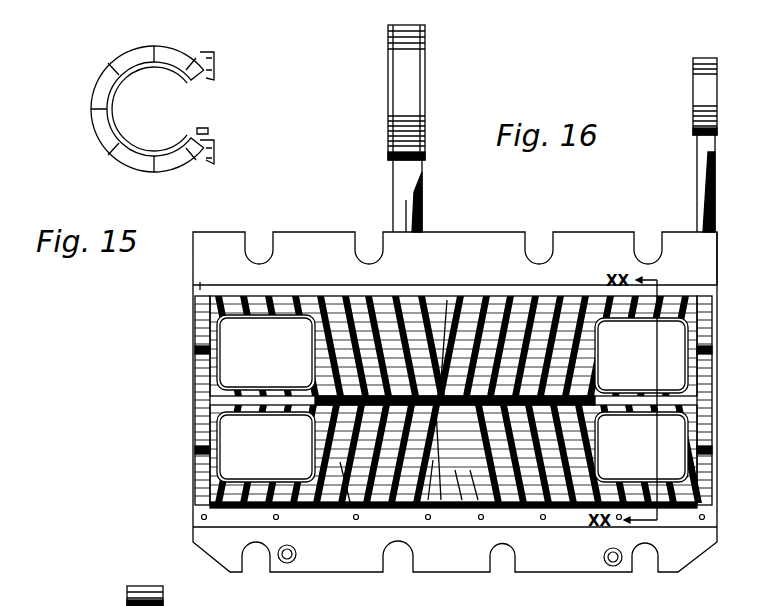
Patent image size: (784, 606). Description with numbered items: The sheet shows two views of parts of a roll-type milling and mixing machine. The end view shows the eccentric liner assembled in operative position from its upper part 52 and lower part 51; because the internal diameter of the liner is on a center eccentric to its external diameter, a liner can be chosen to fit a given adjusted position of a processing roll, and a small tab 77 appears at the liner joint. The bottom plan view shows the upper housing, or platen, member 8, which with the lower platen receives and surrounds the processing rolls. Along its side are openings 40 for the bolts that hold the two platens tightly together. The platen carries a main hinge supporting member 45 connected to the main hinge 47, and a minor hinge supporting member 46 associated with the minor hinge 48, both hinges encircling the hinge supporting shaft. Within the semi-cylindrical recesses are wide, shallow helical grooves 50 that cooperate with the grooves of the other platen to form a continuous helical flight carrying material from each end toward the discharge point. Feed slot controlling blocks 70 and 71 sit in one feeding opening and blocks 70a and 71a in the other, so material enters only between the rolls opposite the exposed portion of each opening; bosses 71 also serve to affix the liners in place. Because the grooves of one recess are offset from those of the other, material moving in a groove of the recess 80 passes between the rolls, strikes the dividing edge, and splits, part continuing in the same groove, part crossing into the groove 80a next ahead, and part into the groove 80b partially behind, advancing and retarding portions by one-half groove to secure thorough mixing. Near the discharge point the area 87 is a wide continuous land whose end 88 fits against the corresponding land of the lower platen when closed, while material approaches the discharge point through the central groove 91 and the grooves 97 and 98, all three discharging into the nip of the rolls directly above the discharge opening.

In FIG. 16, the upper housing, or platen, member 8 is at (313, 234).
In FIG. 16, the openings 40 is at (530, 238).
In FIG. 16, the main hinge supporting member 45 is at (425, 197).
In FIG. 16, the minor hinge supporting member 46 is at (700, 175).
In FIG. 16, the main hinge 47 is at (415, 78).
In FIG. 16, the minor hinge 48 is at (703, 97).
In FIG. 16, the helical grooves 50 is at (373, 307).
In FIG. 15, the lower liner part 51 is at (118, 148).
In FIG. 15, the upper liner part 52 is at (110, 73).
In FIG. 16, the upper liner part 52 is at (322, 507).
In FIG. 16, the block 70 is at (668, 355).
In FIG. 16, the block 70a is at (306, 341).
In FIG. 16, the block 71 is at (668, 450).
In FIG. 16, the block 71a is at (306, 446).
In FIG. 15, the tab 77 is at (200, 160).
In FIG. 16, the recess 80 is at (355, 352).
In FIG. 16, the groove 80a is at (365, 465).
In FIG. 16, the groove 80b is at (343, 465).
In FIG. 16, the land 87 is at (437, 462).
In FIG. 16, the end of land 88 is at (455, 472).
In FIG. 16, the groove 91 is at (453, 322).
In FIG. 16, the groove 97 is at (472, 475).
In FIG. 16, the groove 98 is at (437, 462).